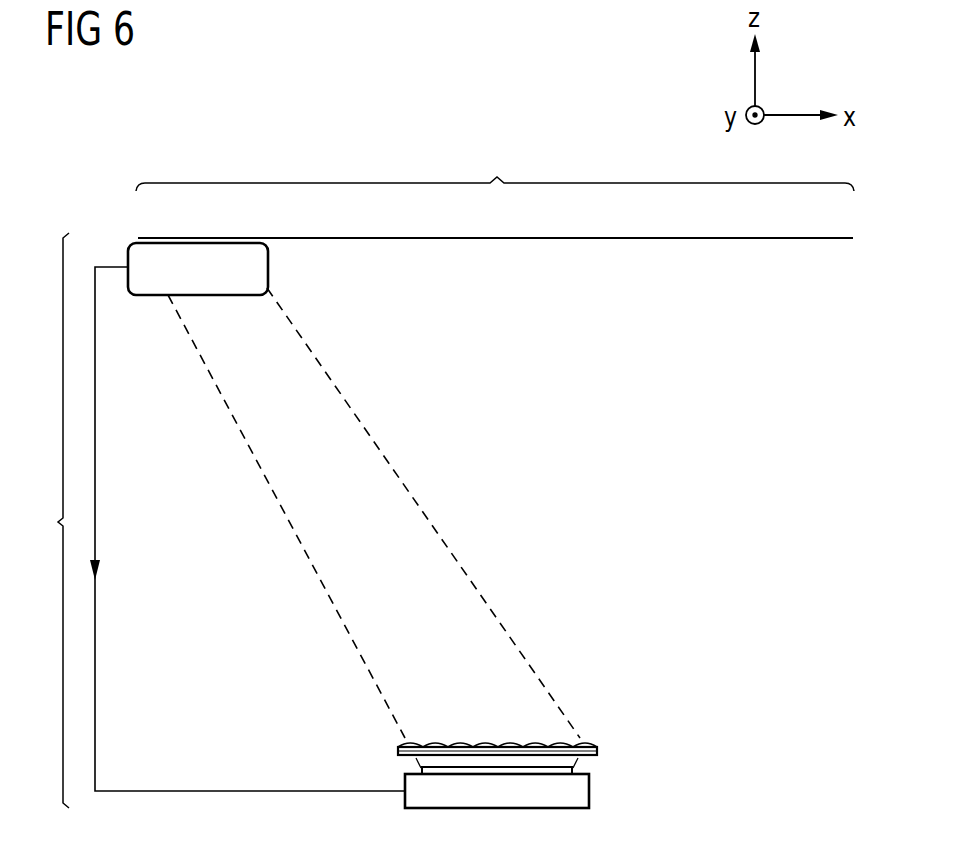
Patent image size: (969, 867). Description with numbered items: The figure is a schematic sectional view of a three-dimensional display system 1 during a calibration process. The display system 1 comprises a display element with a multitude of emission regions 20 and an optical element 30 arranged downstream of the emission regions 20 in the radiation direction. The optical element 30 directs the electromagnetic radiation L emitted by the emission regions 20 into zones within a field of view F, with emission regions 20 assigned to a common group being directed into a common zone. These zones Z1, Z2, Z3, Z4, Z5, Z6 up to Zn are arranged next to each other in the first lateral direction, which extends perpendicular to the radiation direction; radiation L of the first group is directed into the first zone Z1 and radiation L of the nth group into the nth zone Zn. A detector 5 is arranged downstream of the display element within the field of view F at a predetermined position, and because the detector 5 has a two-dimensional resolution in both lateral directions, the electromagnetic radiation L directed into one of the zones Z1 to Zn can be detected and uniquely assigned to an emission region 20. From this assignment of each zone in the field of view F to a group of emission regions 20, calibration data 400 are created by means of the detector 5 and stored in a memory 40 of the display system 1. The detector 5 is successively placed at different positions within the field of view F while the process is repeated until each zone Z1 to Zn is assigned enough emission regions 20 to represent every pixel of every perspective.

The 3D display system 1 is at (56, 520).
The detector 5 is at (268, 270).
The calibration data 400 is at (97, 531).
The electromagnetic radiation L is at (438, 532).
The optical element 30 is at (597, 749).
The emission regions 20 is at (574, 771).
The memory 40 is at (590, 793).
The field of view F is at (495, 166).
The first zone Z1 is at (187, 219).
The second zone Z2 is at (288, 219).
The third zone Z3 is at (388, 219).
The fourth zone Z4 is at (492, 219).
The fifth zone Z5 is at (592, 219).
The sixth zone Z6 is at (692, 219).
The nth zone Zn is at (793, 219).